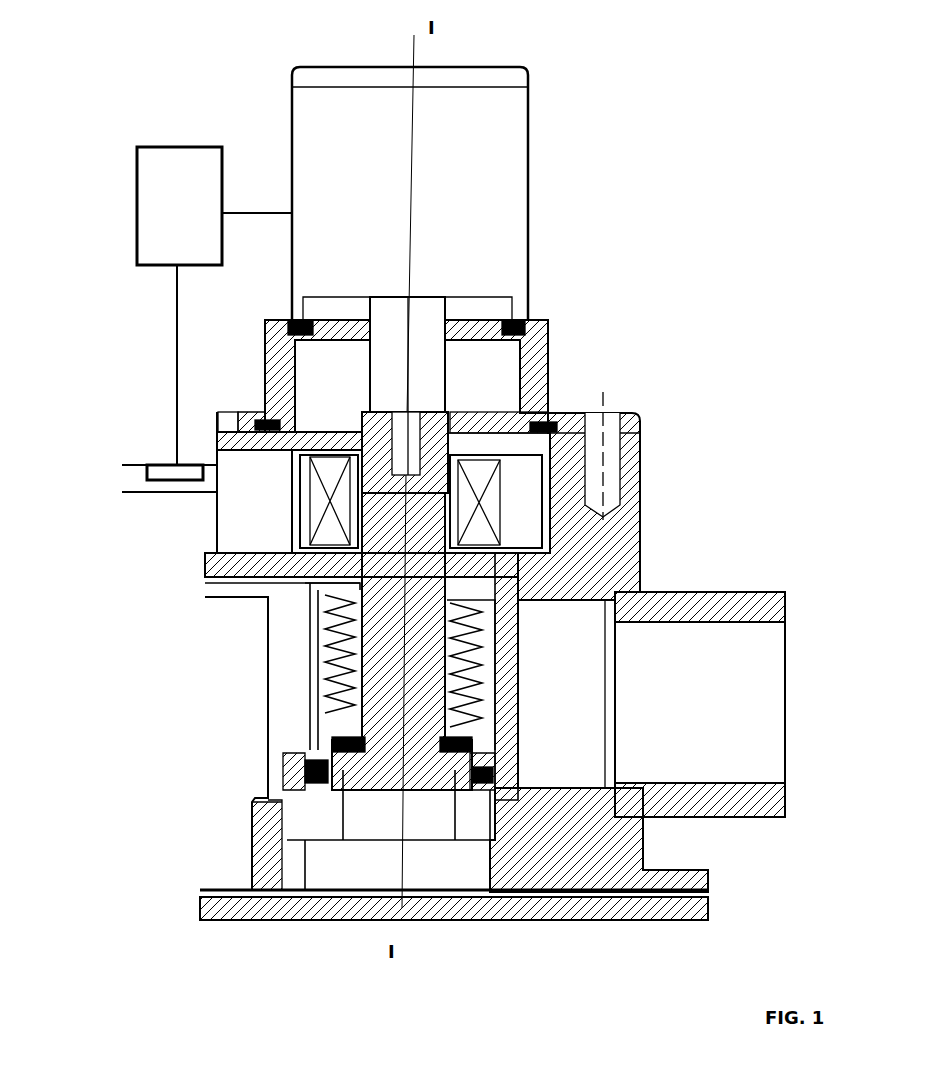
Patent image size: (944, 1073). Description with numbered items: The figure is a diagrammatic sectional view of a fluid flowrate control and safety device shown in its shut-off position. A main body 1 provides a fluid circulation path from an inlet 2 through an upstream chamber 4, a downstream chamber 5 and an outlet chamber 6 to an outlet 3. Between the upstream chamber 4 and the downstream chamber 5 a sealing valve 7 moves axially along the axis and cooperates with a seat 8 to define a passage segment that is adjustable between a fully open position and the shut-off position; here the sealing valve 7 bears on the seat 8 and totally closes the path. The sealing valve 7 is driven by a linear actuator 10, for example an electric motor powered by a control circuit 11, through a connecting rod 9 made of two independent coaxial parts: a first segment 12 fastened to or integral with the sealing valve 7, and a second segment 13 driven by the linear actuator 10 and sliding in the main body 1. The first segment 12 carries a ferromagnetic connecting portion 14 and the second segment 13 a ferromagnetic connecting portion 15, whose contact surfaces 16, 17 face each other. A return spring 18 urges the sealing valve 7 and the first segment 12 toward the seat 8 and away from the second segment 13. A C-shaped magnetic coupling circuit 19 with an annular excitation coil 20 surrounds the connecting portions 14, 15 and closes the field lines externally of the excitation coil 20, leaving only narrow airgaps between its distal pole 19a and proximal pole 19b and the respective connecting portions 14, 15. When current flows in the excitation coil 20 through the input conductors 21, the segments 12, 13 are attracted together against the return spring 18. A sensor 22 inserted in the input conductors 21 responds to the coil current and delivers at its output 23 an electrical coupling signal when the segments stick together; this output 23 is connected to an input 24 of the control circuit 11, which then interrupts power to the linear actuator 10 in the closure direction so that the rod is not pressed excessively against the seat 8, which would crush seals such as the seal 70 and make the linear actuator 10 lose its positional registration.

The main body 1 is at (640, 572).
The inlet 2 is at (290, 750).
The outlet 3 is at (757, 682).
The upstream chamber 4 is at (320, 673).
The downstream chamber 5 is at (437, 827).
The outlet chamber 6 is at (570, 800).
The sealing valve 7 is at (405, 833).
The seat 8 is at (335, 752).
The connecting rod 9 is at (458, 370).
The linear actuator 10 is at (512, 210).
The control circuit 11 is at (176, 177).
The first segment 12 is at (345, 612).
The second segment 13 is at (388, 352).
The connecting portion 14 is at (305, 545).
The connecting portion 15 is at (383, 483).
The contact surface 16 is at (300, 505).
The contact surface 17 is at (500, 550).
The return spring 18 is at (250, 722).
The magnetic coupling circuit 19 is at (495, 430).
The distal pole 19a is at (560, 600).
The proximal pole 19b is at (430, 503).
The excitation coil 20 is at (528, 505).
The input conductors 21 is at (122, 465).
The sensor 22 is at (163, 463).
The output 23 is at (170, 392).
The input 24 is at (173, 277).
The seal 70 is at (387, 765).